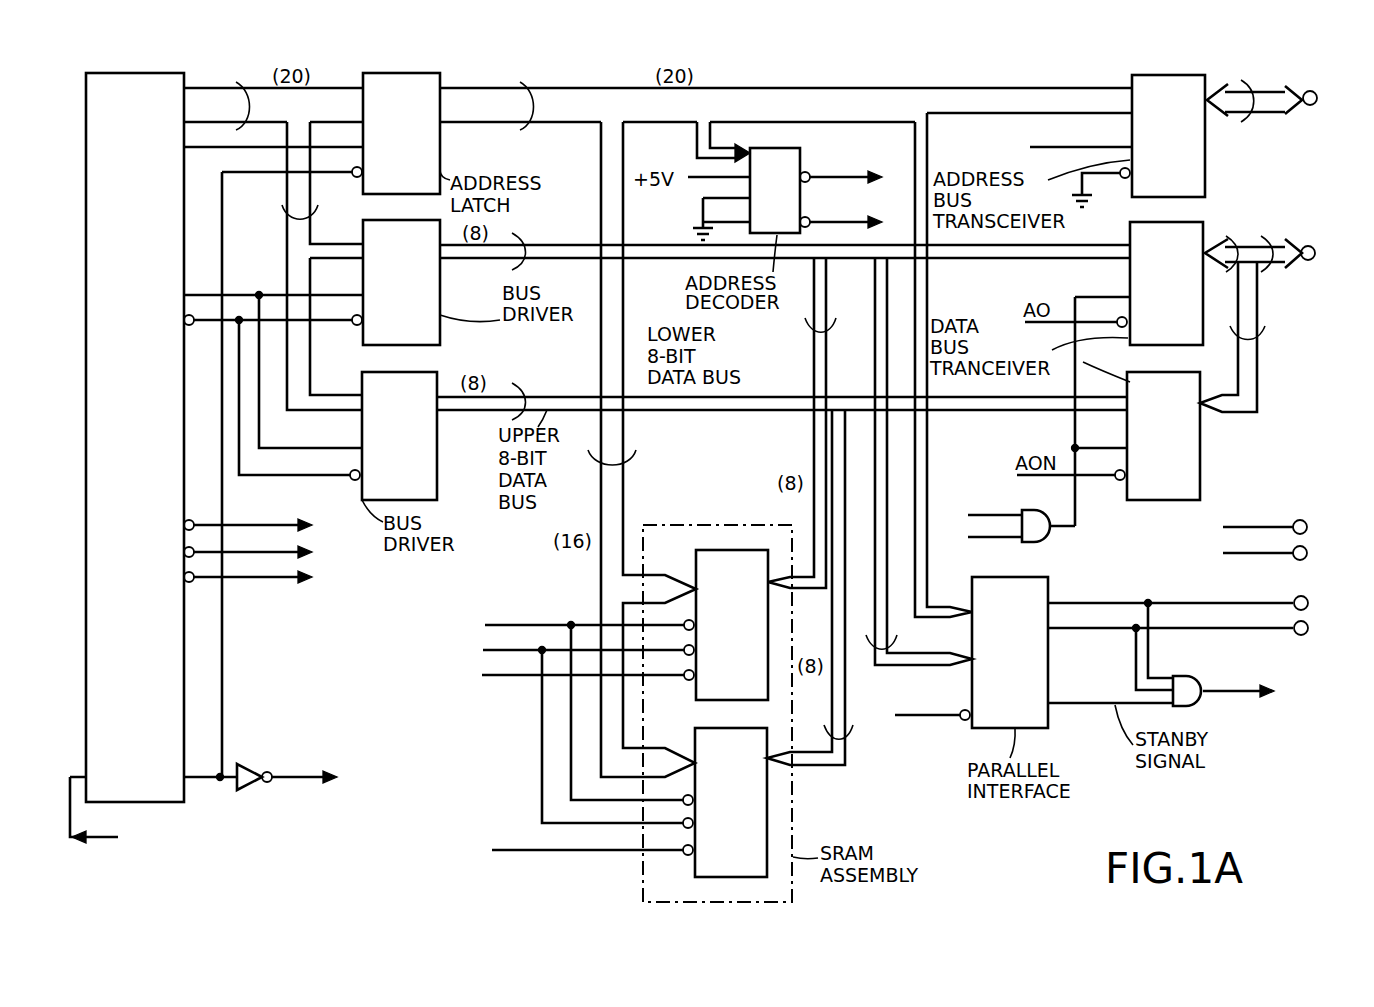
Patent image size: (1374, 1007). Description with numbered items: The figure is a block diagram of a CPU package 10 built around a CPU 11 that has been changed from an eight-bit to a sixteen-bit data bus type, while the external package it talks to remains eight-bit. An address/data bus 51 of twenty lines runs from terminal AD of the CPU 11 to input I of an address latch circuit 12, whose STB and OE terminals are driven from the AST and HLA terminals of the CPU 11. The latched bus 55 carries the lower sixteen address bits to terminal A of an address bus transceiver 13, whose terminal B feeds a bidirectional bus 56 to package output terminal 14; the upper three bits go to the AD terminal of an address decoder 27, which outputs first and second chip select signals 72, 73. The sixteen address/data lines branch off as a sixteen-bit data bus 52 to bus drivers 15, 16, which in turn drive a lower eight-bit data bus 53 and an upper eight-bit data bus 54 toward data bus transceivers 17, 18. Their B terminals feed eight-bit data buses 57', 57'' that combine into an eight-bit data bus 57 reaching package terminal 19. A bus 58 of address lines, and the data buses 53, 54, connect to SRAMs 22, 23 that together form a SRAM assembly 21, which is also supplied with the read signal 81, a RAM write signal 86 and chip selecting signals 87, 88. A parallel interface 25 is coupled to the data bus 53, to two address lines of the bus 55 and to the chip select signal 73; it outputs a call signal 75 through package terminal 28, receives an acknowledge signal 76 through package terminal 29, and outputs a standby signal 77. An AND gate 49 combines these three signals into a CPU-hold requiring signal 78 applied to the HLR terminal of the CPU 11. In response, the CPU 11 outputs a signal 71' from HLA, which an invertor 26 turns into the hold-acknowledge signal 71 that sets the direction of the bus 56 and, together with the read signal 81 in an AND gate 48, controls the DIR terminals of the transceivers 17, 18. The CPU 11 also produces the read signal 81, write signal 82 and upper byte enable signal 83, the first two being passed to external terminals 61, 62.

The CPU package 10 is at (420, 798).
The CPU 11 is at (142, 254).
The address latch circuit 12 is at (440, 140).
The address bus transceiver 13 is at (1205, 145).
The output terminal 14 is at (1309, 91).
The bus driver 15 is at (440, 295).
The bus driver 16 is at (437, 443).
The data bus transceiver 17 is at (1205, 222).
The data bus transceiver 18 is at (1200, 440).
The CPU package terminal 19 is at (1322, 237).
The SRAM assembly 21 is at (643, 885).
The SRAM 22 is at (725, 550).
The SRAM 23 is at (768, 853).
The parallel interface 25 is at (1048, 577).
The invertor 26 is at (255, 790).
The address decoder 27 is at (800, 150).
The package terminal 28 is at (1307, 598).
The package terminal 29 is at (1307, 628).
The AND gate 48 is at (1040, 540).
The AND gate 49 is at (1205, 700).
The address/data bus 51 is at (245, 82).
The 16-bit data bus 52 is at (283, 220).
The lower 8-bit data bus 53 is at (522, 236).
The upper 8-bit data bus 54 is at (520, 386).
The bus 55 is at (530, 128).
The bidirectional bus 56 is at (1250, 118).
The 8-bit data bus 57 is at (1258, 226).
The 8-bit data bus 57' is at (1248, 233).
The 8-bit data bus 57'' is at (1262, 337).
The bus 58 is at (636, 461).
The terminal 61 is at (1300, 520).
The terminal 62 is at (1305, 548).
The hold-acknowledge signal 71 is at (702, 448).
The signal 71' is at (268, 506).
The first chip select signal 72 is at (845, 172).
The second chip select signal 73 is at (845, 222).
The call signal 75 is at (1185, 603).
The acknowledge signal 76 is at (1170, 632).
The standby signal 77 is at (1080, 702).
The CPU-hold requiring signal 78 is at (107, 835).
The read signal 81 is at (245, 523).
The write signal 82 is at (275, 550).
The upper byte enable signal 83 is at (280, 573).
The RAM write signal 86 is at (505, 624).
The chip selecting signal 87 is at (495, 678).
The chip selecting signal 88 is at (508, 850).